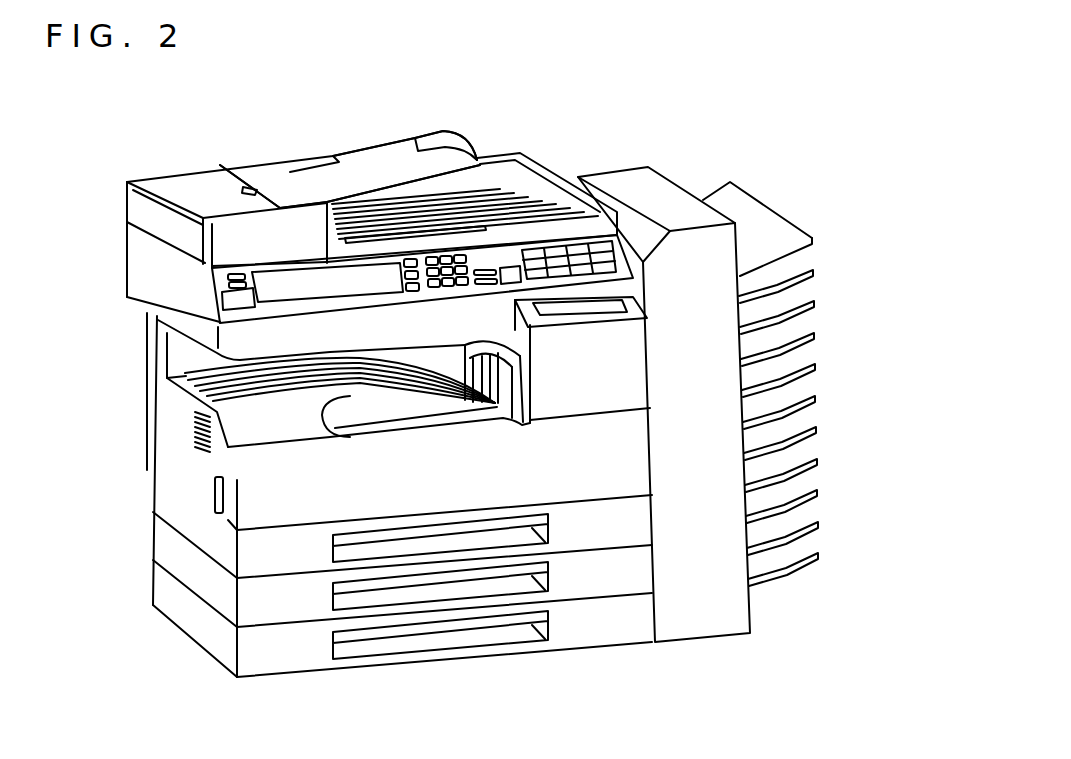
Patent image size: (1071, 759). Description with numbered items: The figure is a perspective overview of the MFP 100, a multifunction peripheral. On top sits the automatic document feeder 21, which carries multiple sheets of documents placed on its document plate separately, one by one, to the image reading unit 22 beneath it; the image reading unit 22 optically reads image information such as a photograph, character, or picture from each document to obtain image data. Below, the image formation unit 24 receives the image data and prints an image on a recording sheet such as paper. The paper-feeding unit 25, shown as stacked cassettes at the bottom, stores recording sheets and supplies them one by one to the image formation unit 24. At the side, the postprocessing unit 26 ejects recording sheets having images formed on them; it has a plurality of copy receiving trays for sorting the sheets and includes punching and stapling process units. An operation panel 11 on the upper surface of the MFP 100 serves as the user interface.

The MFP 100 is at (157, 99).
The operation panel 11 is at (490, 262).
The automatic document feeder (ADF) 21 is at (283, 184).
The image reading unit 22 is at (122, 213).
The image formation unit 24 is at (152, 405).
The paper-feeding unit 25 is at (141, 460).
The postprocessing unit 26 is at (635, 178).